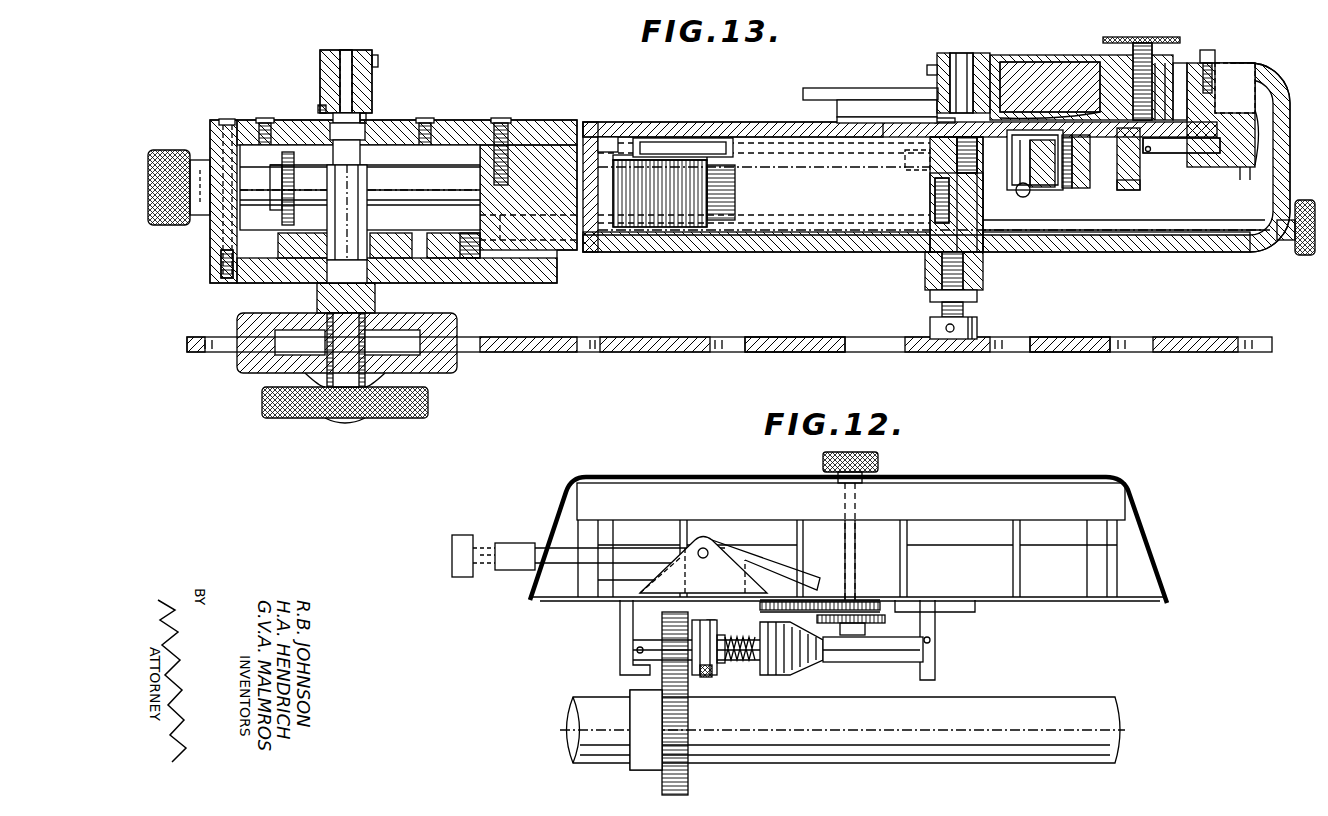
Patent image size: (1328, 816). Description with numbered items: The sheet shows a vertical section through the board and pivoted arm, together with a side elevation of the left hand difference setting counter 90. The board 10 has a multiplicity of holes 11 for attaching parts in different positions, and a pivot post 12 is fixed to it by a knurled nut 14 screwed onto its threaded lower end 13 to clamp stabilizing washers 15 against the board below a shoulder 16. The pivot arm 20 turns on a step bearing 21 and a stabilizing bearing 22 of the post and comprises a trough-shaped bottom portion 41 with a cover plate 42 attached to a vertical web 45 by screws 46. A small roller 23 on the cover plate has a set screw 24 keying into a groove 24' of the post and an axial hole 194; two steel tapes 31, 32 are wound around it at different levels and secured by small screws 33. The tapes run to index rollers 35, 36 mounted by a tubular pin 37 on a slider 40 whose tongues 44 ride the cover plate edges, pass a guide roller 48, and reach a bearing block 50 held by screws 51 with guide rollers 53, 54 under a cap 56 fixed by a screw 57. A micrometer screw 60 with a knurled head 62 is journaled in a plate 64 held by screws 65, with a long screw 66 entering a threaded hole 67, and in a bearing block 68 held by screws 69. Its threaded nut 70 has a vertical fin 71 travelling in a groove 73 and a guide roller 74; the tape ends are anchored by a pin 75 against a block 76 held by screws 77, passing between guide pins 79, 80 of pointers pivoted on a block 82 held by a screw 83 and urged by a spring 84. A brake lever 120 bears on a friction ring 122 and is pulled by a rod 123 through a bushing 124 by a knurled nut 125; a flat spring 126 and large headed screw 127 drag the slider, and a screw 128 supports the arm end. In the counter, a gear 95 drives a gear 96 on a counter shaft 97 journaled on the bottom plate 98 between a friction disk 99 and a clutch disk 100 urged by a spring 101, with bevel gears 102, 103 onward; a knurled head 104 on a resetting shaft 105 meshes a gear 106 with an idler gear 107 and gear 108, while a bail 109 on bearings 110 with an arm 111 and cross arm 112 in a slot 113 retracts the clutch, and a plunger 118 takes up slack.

In FIG. 13, the board 10 is at (1079, 333).
In FIG. 13, the holes 11 is at (888, 338).
In FIG. 13, the pivot post 12 is at (368, 172).
In FIG. 13, the threaded lower end 13 is at (352, 423).
In FIG. 13, the knurled nut 14 is at (430, 405).
In FIG. 13, the stabilizing washers 15 is at (450, 340).
In FIG. 13, the shoulder 16 is at (366, 320).
In FIG. 13, the pivot arm 20 is at (641, 259).
In FIG. 13, the step bearing 21 is at (320, 270).
In FIG. 13, the stabilizing bearing 22 is at (325, 125).
In FIG. 13, the small roller 23 is at (330, 52).
In FIG. 13, the set screw 24 is at (318, 105).
In FIG. 13, the groove 24' is at (386, 93).
In FIG. 13, the steel tape 31 is at (318, 85).
In FIG. 13, the steel tape 32 is at (320, 62).
In FIG. 13, the small screws 33 is at (378, 66).
In FIG. 13, the index roller 35 is at (940, 95).
In FIG. 13, the index roller 36 is at (946, 58).
In FIG. 13, the tubular pin 37 is at (962, 58).
In FIG. 13, the slider 40 is at (846, 93).
In FIG. 13, the trough-shaped bottom portion 41 is at (778, 245).
In FIG. 13, the cover plate 42 is at (720, 122).
In FIG. 13, the tongues 44 is at (832, 116).
In FIG. 13, the vertical web 45 is at (540, 142).
In FIG. 13, the screws 46 is at (497, 160).
In FIG. 13, the guide roller 48 is at (928, 66).
In FIG. 13, the bearing block 50 is at (1272, 115).
In FIG. 13, the screws 51 is at (1168, 91).
In FIG. 13, the guide roller 53 is at (1258, 75).
In FIG. 13, the guide roller 54 is at (1245, 165).
In FIG. 13, the cap 56 is at (1276, 100).
In FIG. 13, the screw 57 is at (1212, 60).
In FIG. 13, the micrometer screw 60 is at (440, 175).
In FIG. 12, the micrometer screw 60 is at (912, 733).
In FIG. 13, the knurled head 62 is at (166, 150).
In FIG. 13, the plate 64 is at (213, 145).
In FIG. 13, the screws 65 is at (264, 118).
In FIG. 13, the long screw 66 is at (226, 120).
In FIG. 13, the threaded hole 67 is at (226, 270).
In FIG. 13, the bearing block 68 is at (985, 250).
In FIG. 13, the screws 69 is at (934, 178).
In FIG. 13, the threaded nut 70 is at (698, 222).
In FIG. 13, the vertical fin 71 is at (622, 140).
In FIG. 13, the groove 73 is at (680, 127).
In FIG. 13, the guide roller 74 is at (668, 140).
In FIG. 13, the pin 75 is at (1148, 152).
In FIG. 13, the block 76 is at (1142, 180).
In FIG. 13, the screws 77 is at (1125, 192).
In FIG. 13, the guide pin 79 is at (1020, 168).
In FIG. 13, the pin 80 is at (1040, 188).
In FIG. 13, the block 82 is at (1090, 165).
In FIG. 13, the screw 83 is at (1075, 183).
In FIG. 13, the spring 84 is at (1022, 197).
In FIG. 12, the counter 90 is at (998, 477).
In FIG. 13, the gear 95 is at (283, 220).
In FIG. 12, the gear 95 is at (680, 775).
In FIG. 12, the gear 96 is at (650, 670).
In FIG. 12, the counter shaft 97 is at (735, 662).
In FIG. 12, the bottom plate 98 is at (1060, 600).
In FIG. 12, the friction disk 99 is at (630, 625).
In FIG. 12, the clutch disk 100 is at (698, 678).
In FIG. 12, the spring 101 is at (742, 665).
In FIG. 12, the bevel gear 102 is at (775, 672).
In FIG. 12, the bevel gear 103 is at (825, 650).
In FIG. 12, the knurled head 104 is at (878, 462).
In FIG. 12, the resetting shaft 105 is at (868, 548).
In FIG. 12, the gear 106 is at (895, 622).
In FIG. 12, the idler gear 107 is at (880, 610).
In FIG. 12, the gear 108 is at (798, 602).
In FIG. 12, the bail 109 is at (710, 545).
In FIG. 12, the bearings 110 is at (668, 570).
In FIG. 12, the arm 111 is at (762, 562).
In FIG. 12, the cross arm 112 is at (708, 682).
In FIG. 12, the slot 113 is at (714, 625).
In FIG. 12, the plunger 118 is at (466, 578).
In FIG. 13, the brake lever 120 is at (445, 245).
In FIG. 13, the friction ring 122 is at (283, 255).
In FIG. 13, the rod 123 is at (1075, 250).
In FIG. 13, the bushing 124 is at (1285, 242).
In FIG. 13, the knurled nut 125 is at (1306, 256).
In FIG. 13, the flat spring 126 is at (1105, 95).
In FIG. 13, the large headed screw 127 is at (1138, 37).
In FIG. 13, the screw 128 is at (980, 325).
In FIG. 13, the axial hole 194 is at (350, 55).